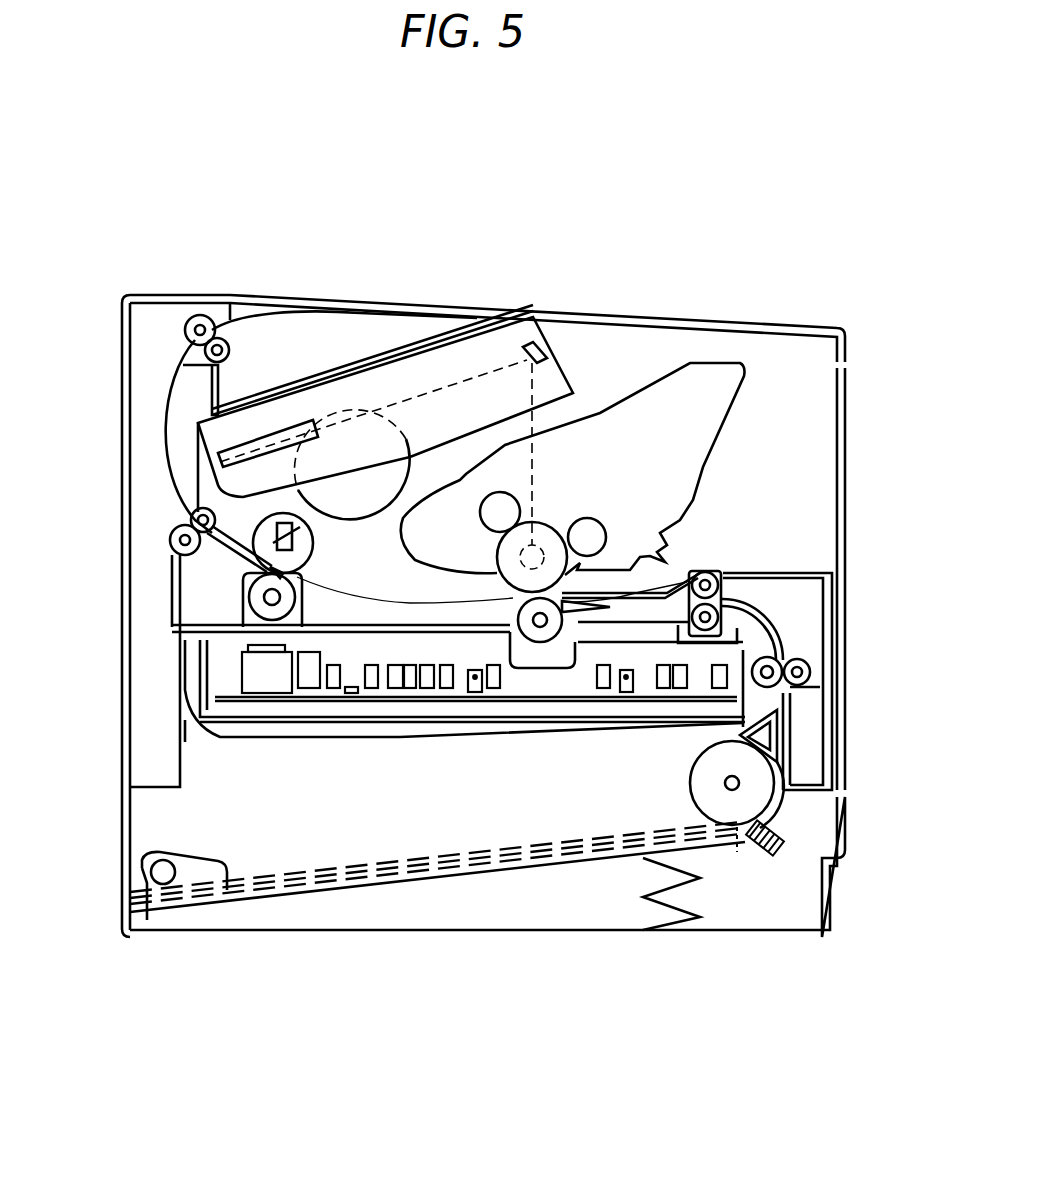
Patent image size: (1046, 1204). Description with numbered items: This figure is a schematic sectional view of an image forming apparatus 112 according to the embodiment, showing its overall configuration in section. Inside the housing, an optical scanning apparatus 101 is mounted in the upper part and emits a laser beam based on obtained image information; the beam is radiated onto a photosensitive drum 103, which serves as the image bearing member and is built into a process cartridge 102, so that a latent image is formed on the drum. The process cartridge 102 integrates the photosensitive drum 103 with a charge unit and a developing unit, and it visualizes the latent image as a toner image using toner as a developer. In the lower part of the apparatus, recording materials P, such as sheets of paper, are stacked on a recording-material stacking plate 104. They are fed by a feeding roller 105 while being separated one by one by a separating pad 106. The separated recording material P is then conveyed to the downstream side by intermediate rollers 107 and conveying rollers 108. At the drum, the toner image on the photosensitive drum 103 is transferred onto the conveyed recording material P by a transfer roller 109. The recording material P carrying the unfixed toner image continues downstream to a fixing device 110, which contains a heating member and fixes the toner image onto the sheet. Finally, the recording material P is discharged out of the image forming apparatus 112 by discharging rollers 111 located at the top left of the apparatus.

The optical scanning apparatus 101 is at (557, 373).
The process cartridge 102 is at (727, 383).
The photosensitive drum 103 is at (692, 513).
The recording-material stacking plate 104 is at (453, 873).
The feeding roller 105 is at (757, 770).
The separating pad 106 is at (773, 813).
The intermediate rollers 107 is at (810, 660).
The conveying rollers 108 is at (727, 587).
The transfer roller 109 is at (543, 643).
The fixing device 110 is at (305, 556).
The discharging rollers 111 is at (188, 300).
The image forming apparatus 112 is at (417, 253).
The recording material P is at (310, 870).